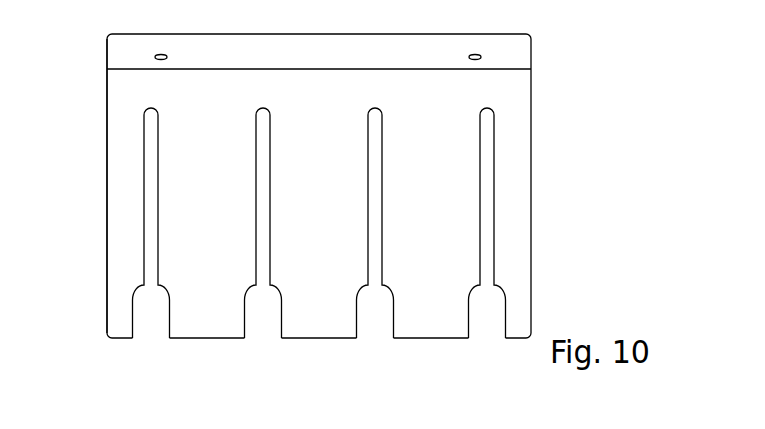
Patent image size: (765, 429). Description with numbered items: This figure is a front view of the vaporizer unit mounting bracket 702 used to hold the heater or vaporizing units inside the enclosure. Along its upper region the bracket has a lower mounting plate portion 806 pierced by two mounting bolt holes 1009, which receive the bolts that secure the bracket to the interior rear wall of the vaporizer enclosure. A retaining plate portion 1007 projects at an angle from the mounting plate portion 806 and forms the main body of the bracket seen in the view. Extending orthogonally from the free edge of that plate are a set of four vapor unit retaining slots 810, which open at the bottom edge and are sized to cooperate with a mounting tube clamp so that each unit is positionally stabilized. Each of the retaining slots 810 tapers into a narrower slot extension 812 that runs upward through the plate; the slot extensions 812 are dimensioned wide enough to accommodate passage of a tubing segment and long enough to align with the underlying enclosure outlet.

The vaporizer unit mounting bracket 702 is at (142, 87).
The lower mounting plate portion 806 is at (413, 48).
The vapor unit retaining slots 810 is at (485, 323).
The slot extensions 812 is at (332, 259).
The retaining plate portion 1007 is at (117, 277).
The mounting bolt holes 1009 is at (163, 53).